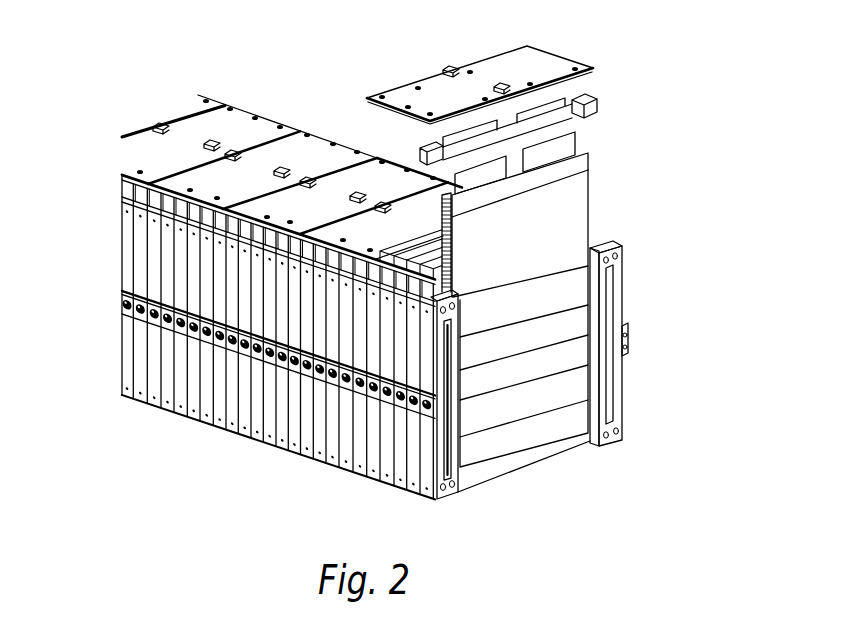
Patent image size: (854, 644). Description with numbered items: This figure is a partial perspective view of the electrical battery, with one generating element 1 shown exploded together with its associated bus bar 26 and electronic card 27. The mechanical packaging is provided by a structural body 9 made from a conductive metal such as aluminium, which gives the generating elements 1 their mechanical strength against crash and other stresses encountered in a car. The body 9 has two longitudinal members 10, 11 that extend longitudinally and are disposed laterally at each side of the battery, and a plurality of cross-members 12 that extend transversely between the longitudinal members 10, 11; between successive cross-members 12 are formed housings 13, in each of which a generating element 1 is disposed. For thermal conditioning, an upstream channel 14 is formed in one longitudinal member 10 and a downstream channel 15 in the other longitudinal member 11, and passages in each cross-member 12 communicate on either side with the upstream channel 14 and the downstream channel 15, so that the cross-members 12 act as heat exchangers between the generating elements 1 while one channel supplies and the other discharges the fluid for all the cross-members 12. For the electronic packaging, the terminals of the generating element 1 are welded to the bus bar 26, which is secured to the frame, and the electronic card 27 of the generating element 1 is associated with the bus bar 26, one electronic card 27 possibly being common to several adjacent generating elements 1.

The generating element 1 is at (561, 326).
The structural body 9 is at (207, 393).
The longitudinal member 10 is at (482, 413).
The longitudinal member 11 is at (638, 342).
The cross-member 12 is at (515, 432).
The housing 13 is at (533, 332).
The upstream channel 14 is at (448, 458).
The downstream channel 15 is at (612, 411).
The bus bar 26 is at (598, 108).
The electronic card 27 is at (565, 64).